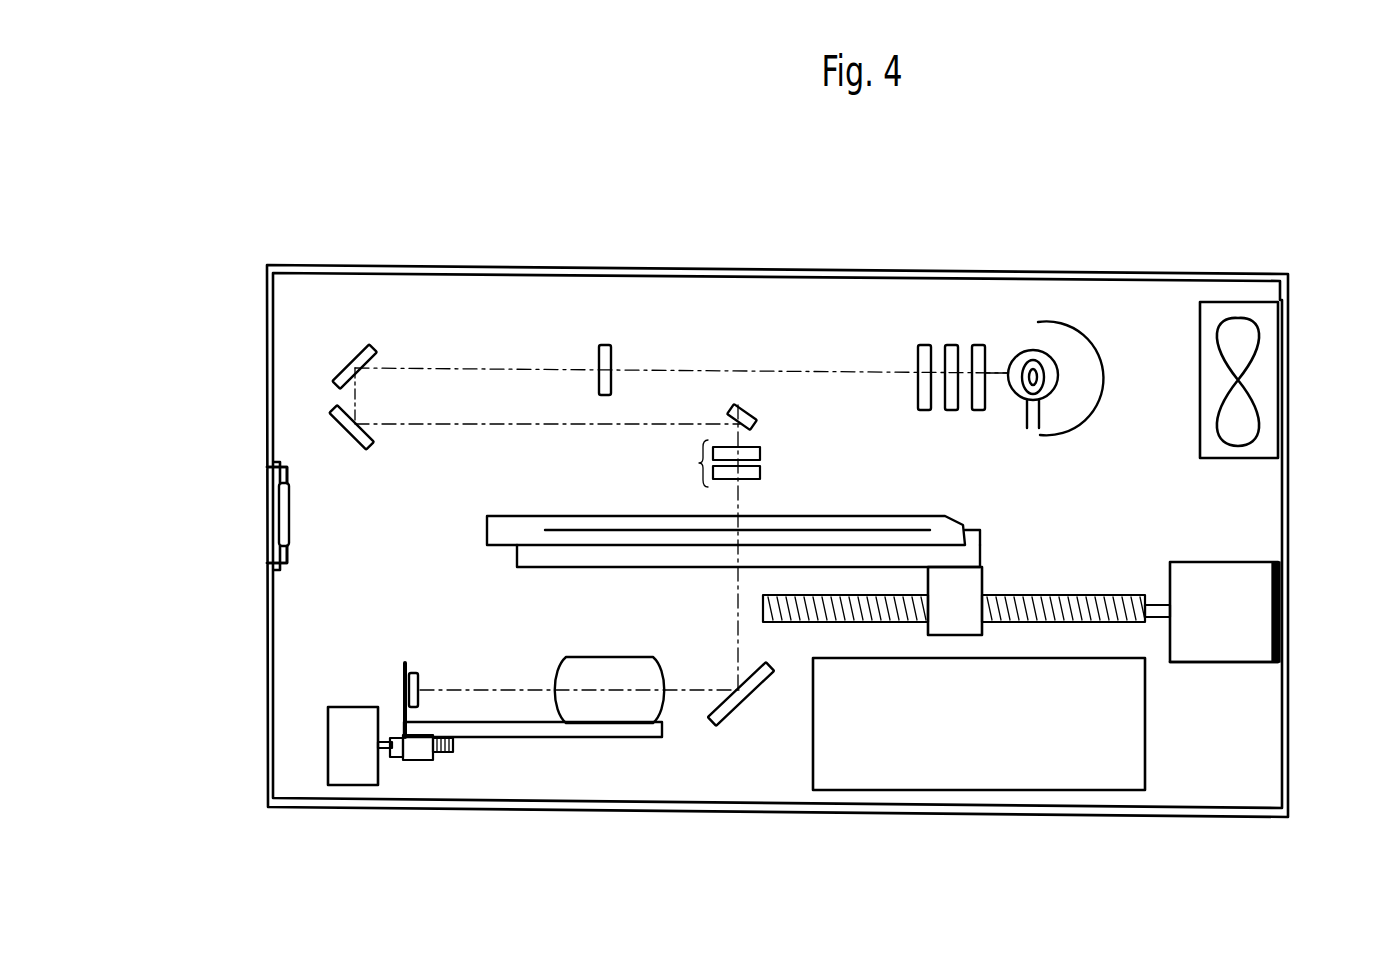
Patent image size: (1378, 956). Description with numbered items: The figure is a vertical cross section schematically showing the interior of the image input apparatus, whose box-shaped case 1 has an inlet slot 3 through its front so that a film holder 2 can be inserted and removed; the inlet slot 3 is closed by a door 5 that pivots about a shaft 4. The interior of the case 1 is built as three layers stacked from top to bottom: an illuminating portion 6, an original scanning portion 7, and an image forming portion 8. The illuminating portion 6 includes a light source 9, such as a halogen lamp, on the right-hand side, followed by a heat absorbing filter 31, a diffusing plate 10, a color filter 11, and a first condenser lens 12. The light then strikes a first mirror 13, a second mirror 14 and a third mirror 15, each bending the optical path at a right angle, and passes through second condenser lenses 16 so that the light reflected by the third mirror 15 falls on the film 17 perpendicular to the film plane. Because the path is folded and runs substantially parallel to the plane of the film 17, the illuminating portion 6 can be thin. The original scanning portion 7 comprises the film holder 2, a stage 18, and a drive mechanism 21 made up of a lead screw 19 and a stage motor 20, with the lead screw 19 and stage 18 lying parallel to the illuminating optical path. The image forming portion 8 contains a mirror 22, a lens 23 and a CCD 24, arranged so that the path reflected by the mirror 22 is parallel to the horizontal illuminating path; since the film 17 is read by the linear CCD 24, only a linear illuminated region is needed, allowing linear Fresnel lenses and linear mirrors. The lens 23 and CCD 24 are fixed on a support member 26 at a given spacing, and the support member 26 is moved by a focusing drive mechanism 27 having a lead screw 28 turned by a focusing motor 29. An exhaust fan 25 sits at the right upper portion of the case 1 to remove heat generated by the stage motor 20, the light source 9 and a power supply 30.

The case 1 is at (447, 265).
The film holder 2 is at (972, 523).
The inlet slot 3 is at (262, 517).
The shaft 4 is at (278, 485).
The door 5 is at (278, 528).
The illuminating portion 6 is at (322, 350).
The original scanning portion 7 is at (1140, 645).
The image forming portion 8 is at (507, 757).
The light source 9 is at (1032, 330).
The diffusing plate 10 is at (946, 345).
The color filter 11 is at (920, 348).
The first condenser lens 12 is at (603, 345).
The first mirror 13 is at (345, 352).
The second mirror 14 is at (343, 427).
The third mirror 15 is at (738, 405).
The second condenser lenses 16 is at (703, 463).
The film 17 is at (830, 525).
The stage 18 is at (980, 556).
The lead screw 19 is at (787, 623).
The stage motor 20 is at (1243, 626).
The drive mechanism 21 is at (1232, 672).
The mirror 22 is at (734, 722).
The lens 23 is at (633, 705).
The CCD 24 is at (418, 673).
The exhaust fan 25 is at (1259, 353).
The support member 26 is at (556, 740).
The focusing drive mechanism 27 is at (322, 753).
The lead screw 28 is at (442, 754).
The focusing motor 29 is at (357, 768).
The power supply 30 is at (1048, 758).
The heat absorbing filter 31 is at (978, 345).